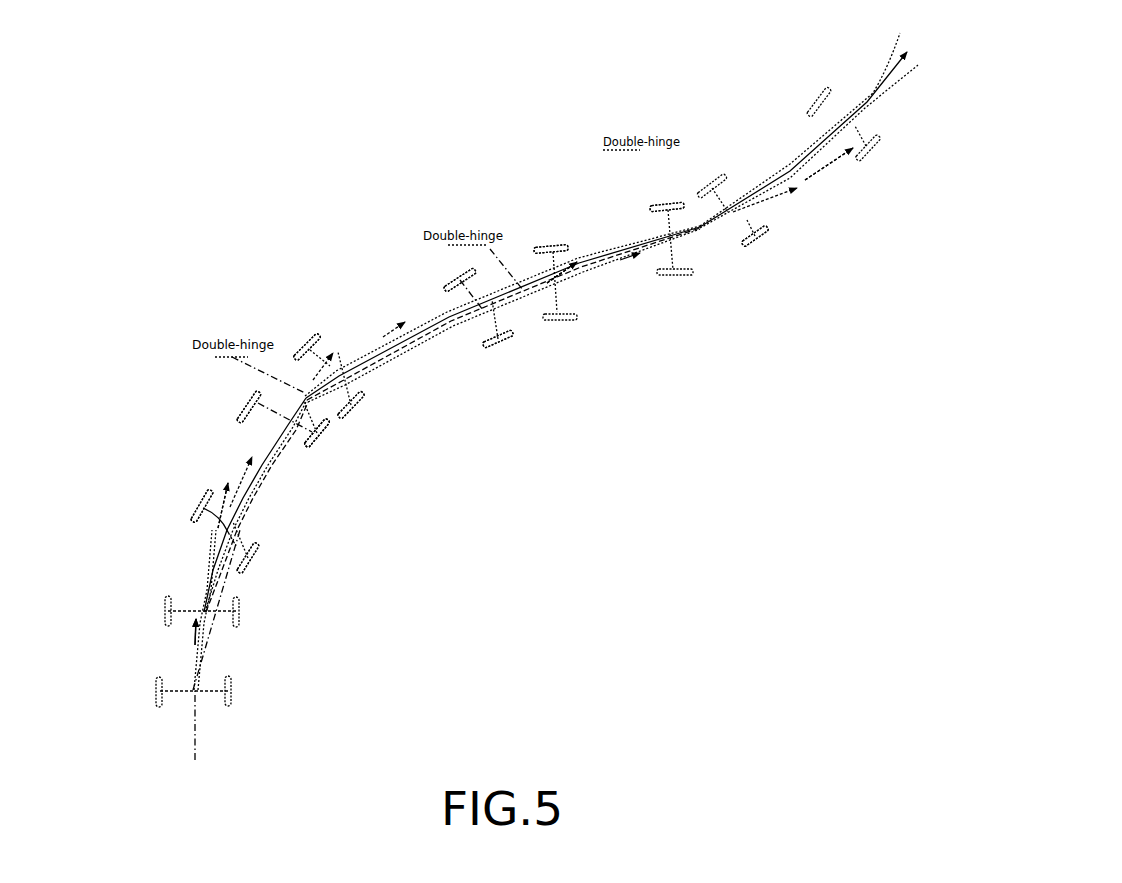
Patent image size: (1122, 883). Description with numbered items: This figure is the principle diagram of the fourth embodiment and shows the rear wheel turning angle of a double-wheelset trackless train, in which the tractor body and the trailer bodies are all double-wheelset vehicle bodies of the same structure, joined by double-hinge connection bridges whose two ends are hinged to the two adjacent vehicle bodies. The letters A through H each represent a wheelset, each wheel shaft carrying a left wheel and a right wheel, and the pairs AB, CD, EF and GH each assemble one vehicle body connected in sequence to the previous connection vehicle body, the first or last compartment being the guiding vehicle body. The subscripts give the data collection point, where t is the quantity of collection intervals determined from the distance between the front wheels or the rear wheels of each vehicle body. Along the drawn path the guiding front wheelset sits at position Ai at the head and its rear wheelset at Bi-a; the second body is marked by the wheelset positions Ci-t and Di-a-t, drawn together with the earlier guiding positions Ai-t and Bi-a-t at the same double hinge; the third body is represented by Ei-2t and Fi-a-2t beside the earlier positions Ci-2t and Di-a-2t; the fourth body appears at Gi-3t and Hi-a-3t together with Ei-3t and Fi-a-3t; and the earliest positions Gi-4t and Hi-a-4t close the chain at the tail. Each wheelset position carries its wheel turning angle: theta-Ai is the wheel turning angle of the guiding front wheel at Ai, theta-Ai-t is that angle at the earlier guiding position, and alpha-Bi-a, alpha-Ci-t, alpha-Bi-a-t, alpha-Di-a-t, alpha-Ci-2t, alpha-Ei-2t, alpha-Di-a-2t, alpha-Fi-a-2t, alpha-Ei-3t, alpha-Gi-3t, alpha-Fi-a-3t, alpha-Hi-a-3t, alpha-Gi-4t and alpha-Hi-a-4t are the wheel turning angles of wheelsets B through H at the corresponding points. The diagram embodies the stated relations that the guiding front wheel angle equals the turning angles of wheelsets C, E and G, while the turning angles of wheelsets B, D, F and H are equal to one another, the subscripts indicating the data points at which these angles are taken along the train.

The guiding front wheelset position Ai is at (838, 123).
The wheelset B position Bi-a is at (702, 227).
The wheelset C position Ci-t is at (667, 203).
The guiding front wheelset earlier position Ai-t is at (663, 204).
The wheelset D position Di-a-t is at (548, 243).
The wheelset B earlier position Bi-a-t is at (531, 250).
The wheelset E position Ei-2t is at (456, 275).
The wheelset C earlier position Ci-2t is at (452, 281).
The wheelset F position Fi-a-2t is at (300, 338).
The wheelset D earlier position Di-a-2t is at (297, 343).
The wheelset G position Gi-3t is at (243, 407).
The wheelset E earlier position Ei-3t is at (245, 407).
The wheelset H position Hi-a-3t is at (197, 500).
The wheelset F earlier position Fi-a-3t is at (195, 505).
The wheelset G earlier position Gi-4t is at (165, 605).
The wheelset H earlier position Hi-a-4t is at (157, 686).
The guiding front wheel turning angle theta-Ai is at (878, 102).
The wheelset B turning angle alpha-Bi-a is at (802, 175).
The guiding front wheel earlier turning angle theta-Ai-t is at (705, 231).
The wheelset C turning angle alpha-Ci-t is at (708, 240).
The wheelset B earlier turning angle alpha-Bi-a-t is at (583, 270).
The wheelset D turning angle alpha-Di-a-t is at (593, 278).
The wheelset C earlier turning angle alpha-Ci-2t is at (507, 308).
The wheelset E turning angle alpha-Ei-2t is at (517, 333).
The wheelset D earlier turning angle alpha-Di-a-2t is at (367, 357).
The wheelset F turning angle alpha-Fi-a-2t is at (373, 367).
The wheelset E earlier turning angle alpha-Ei-3t is at (292, 412).
The wheelset G turning angle alpha-Gi-3t is at (297, 435).
The wheelset F earlier turning angle alpha-Fi-a-3t is at (250, 547).
The wheelset H turning angle alpha-Hi-a-3t is at (254, 564).
The wheelset G earlier turning angle alpha-Gi-4t is at (203, 612).
The wheelset H earlier turning angle alpha-Hi-a-4t is at (197, 673).